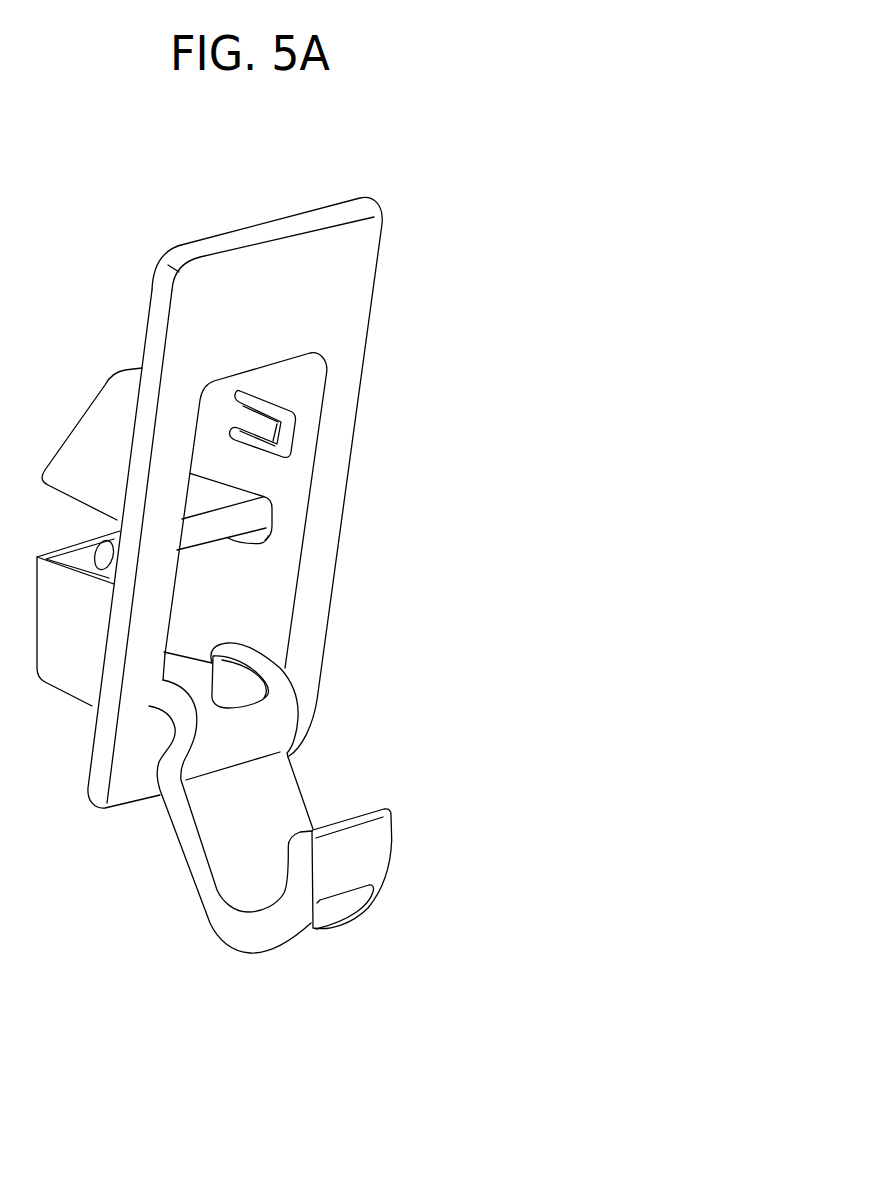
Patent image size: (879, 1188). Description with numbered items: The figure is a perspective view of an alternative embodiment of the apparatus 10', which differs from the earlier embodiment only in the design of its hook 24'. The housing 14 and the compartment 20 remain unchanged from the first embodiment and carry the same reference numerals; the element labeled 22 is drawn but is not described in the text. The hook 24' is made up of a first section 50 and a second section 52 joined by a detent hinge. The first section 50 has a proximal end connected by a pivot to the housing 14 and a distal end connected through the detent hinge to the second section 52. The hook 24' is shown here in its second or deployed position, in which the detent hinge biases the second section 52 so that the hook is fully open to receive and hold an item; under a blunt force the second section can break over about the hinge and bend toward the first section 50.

The apparatus 10' is at (321, 589).
The housing 14 is at (353, 338).
The compartment 20 is at (220, 494).
The rib lower ledge 22 is at (203, 528).
The hook 24' is at (286, 827).
The first section 50 is at (302, 797).
The second section 52 is at (393, 848).